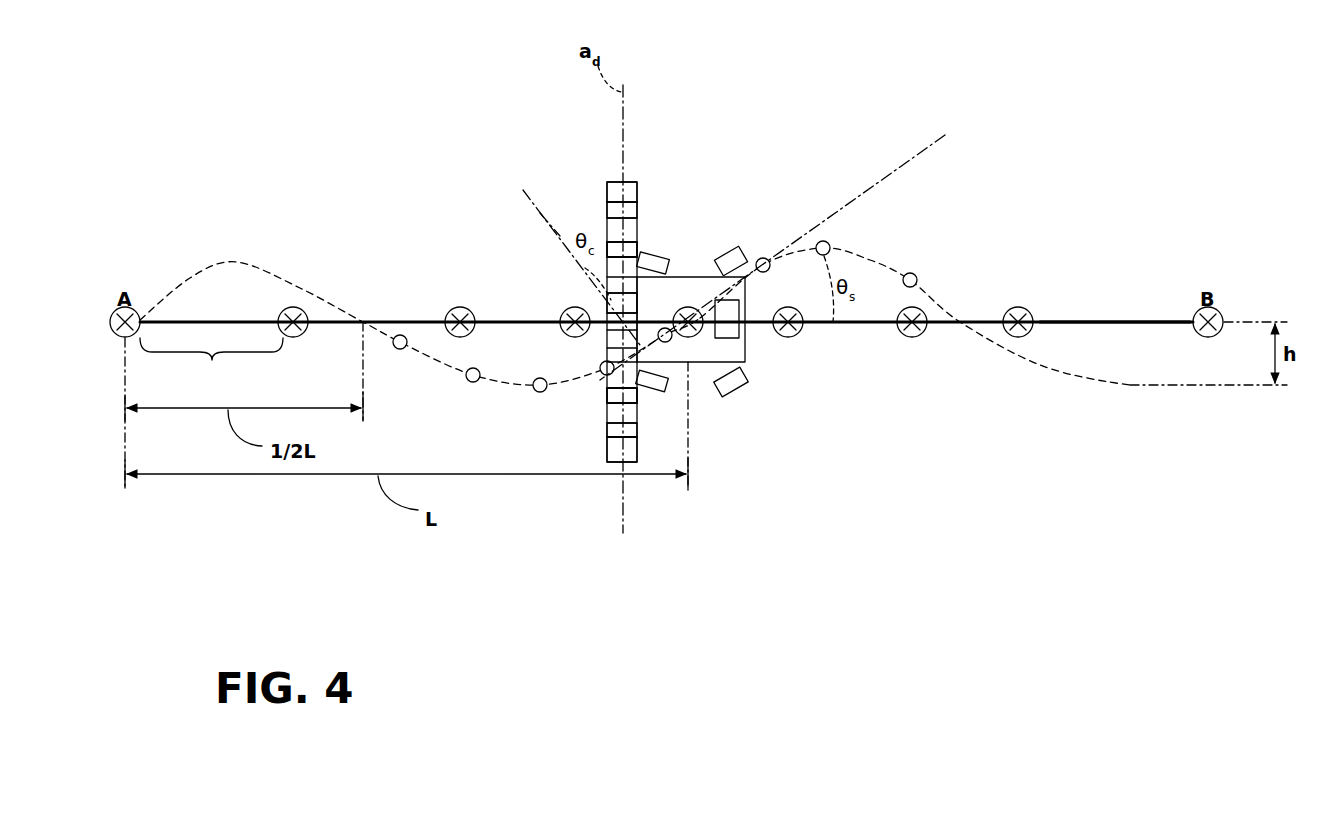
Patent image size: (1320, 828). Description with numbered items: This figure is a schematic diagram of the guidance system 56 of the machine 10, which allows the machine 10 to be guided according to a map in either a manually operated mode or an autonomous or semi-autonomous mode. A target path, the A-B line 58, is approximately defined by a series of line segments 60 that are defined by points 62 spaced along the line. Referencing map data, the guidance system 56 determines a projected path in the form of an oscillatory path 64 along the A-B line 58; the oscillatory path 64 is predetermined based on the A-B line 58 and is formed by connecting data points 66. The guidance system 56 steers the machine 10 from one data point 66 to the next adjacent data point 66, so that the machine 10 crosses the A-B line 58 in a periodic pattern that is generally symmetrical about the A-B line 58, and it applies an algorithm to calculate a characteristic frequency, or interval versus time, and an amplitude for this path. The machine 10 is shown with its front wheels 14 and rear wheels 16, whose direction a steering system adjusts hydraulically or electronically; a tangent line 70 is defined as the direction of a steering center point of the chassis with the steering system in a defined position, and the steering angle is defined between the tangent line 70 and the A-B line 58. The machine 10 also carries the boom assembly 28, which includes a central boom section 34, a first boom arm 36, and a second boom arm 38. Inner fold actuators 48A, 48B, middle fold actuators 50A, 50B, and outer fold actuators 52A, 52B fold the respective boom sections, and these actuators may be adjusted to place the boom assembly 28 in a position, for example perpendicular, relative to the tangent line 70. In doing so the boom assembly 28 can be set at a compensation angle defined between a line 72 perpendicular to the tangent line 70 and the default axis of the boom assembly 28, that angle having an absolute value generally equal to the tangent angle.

The machine 10 is at (693, 272).
The front wheels 14 is at (745, 250).
The rear wheels 16 is at (665, 253).
The boom assembly 28 is at (609, 174).
The central boom section 34 is at (598, 306).
The first boom arm 36 is at (601, 212).
The second boom arm 38 is at (604, 430).
The inner fold actuator 48A is at (637, 247).
The inner fold actuator 48B is at (637, 387).
The middle fold actuator 50A is at (605, 238).
The middle fold actuator 50B is at (637, 400).
The outer fold actuator 52A is at (637, 182).
The outer fold actuator 52B is at (637, 432).
The guidance system 56 is at (748, 335).
The A-B line 58 is at (1075, 320).
The line segments 60 is at (211, 363).
The points 62 is at (460, 306).
The oscillatory path 64 is at (420, 291).
The data points 66 is at (917, 278).
The tangent line 70 is at (930, 152).
The line perpendicular to the tangent line 72 is at (560, 234).